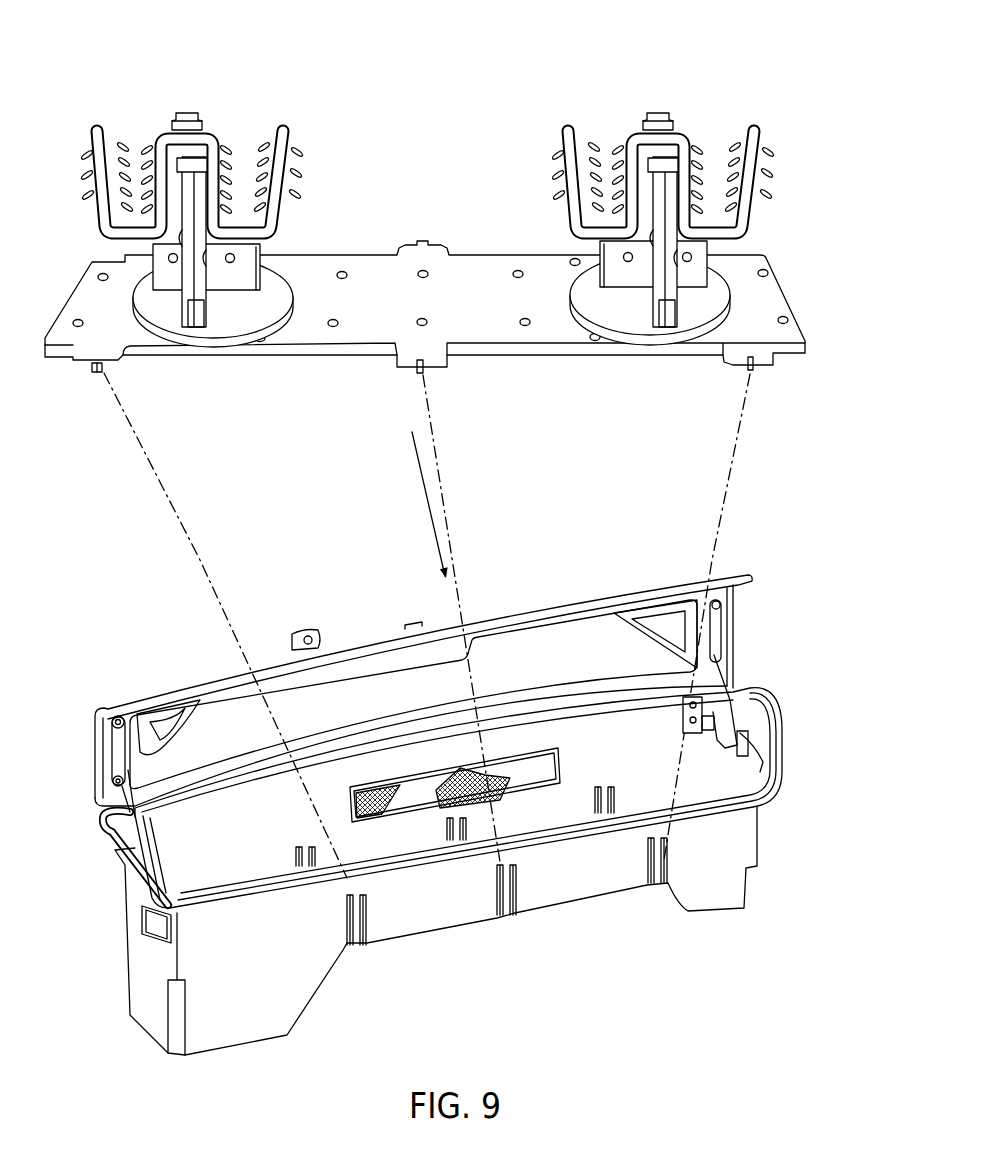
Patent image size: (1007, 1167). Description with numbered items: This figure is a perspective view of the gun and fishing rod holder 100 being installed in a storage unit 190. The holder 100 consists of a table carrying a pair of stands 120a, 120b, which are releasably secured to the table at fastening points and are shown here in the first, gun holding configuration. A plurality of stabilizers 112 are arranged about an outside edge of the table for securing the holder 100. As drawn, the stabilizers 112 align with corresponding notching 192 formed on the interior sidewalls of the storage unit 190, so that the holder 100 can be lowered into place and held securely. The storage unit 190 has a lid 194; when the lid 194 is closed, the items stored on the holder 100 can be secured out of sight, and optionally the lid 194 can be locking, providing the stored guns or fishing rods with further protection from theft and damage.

The gun and fishing rod holder 100 is at (425, 230).
The stabilizers 112 is at (418, 238).
The stand 120a is at (102, 110).
The stand 120b is at (575, 110).
The storage unit 190 is at (758, 917).
The notching 192 is at (351, 955).
The lid 194 is at (765, 639).